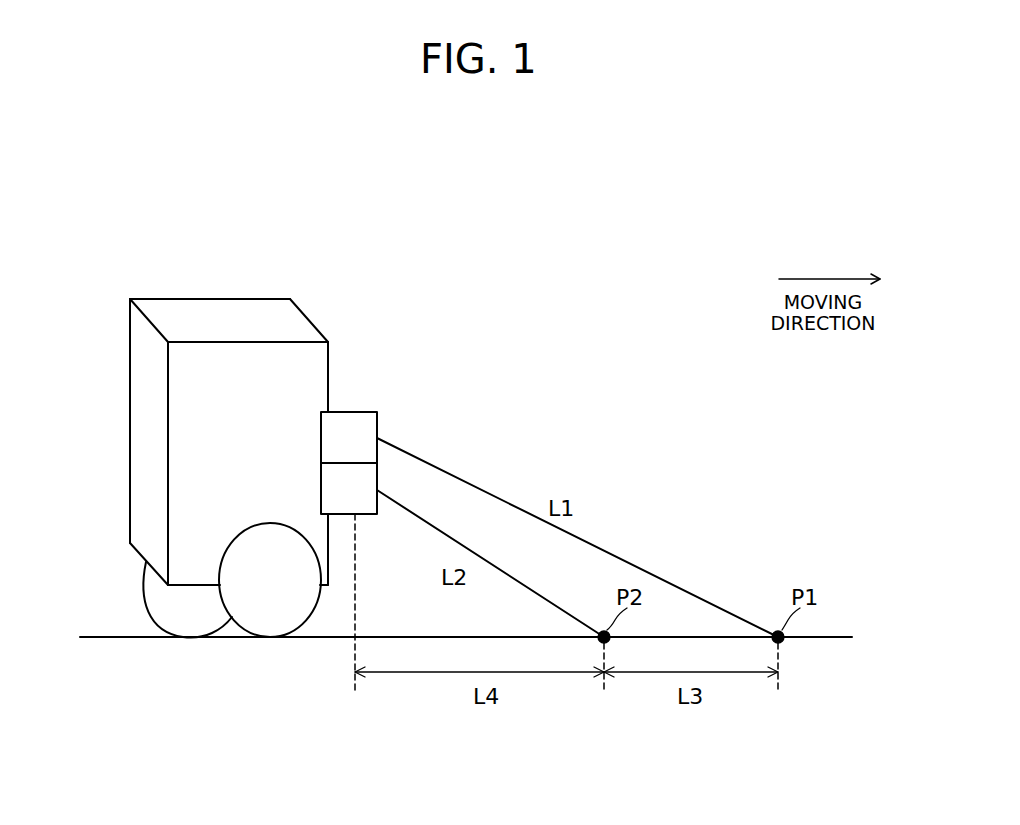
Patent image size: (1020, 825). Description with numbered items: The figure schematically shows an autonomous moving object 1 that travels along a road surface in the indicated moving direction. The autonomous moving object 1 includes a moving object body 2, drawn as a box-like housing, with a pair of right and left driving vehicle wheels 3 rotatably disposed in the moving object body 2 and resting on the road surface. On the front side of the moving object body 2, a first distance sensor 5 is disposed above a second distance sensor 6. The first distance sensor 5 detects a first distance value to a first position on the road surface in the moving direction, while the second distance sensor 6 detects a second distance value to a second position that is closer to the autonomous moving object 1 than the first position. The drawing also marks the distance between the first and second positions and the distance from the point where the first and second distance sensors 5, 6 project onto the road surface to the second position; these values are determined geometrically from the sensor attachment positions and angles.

The autonomous moving object 1 is at (95, 228).
The moving object body 2 is at (130, 438).
The driving vehicle wheels 3 is at (148, 595).
The first distance sensor 5 is at (353, 410).
The second distance sensor 6 is at (363, 517).